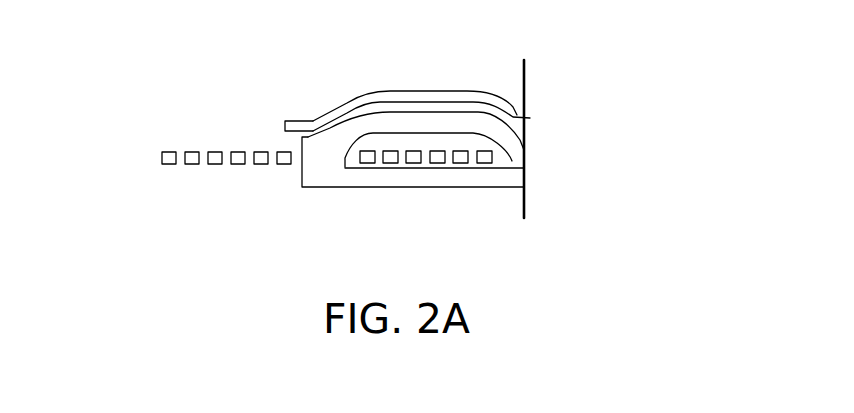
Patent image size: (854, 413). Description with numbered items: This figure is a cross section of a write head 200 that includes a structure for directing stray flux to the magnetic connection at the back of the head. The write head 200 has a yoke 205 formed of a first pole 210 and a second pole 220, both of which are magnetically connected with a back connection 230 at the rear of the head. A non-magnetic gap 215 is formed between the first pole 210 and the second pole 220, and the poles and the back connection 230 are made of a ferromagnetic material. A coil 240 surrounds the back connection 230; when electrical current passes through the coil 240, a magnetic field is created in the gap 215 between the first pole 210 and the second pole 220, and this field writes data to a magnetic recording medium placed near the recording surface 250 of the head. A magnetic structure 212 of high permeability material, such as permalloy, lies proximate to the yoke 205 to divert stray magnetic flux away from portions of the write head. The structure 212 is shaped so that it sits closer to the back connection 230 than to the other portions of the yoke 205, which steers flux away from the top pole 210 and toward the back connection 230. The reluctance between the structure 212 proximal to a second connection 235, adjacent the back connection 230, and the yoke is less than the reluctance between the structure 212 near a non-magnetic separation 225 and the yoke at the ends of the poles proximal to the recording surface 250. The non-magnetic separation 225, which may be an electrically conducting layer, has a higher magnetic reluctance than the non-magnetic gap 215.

The write head 200 is at (642, 243).
The yoke 205 is at (343, 132).
The first pole 210 is at (520, 150).
The magnetic structure 212 is at (390, 90).
The non-magnetic gap 215 is at (512, 162).
The second pole 220 is at (520, 181).
The non-magnetic separation 225 is at (512, 118).
The back connection 230 is at (302, 177).
The second connection 235 is at (283, 126).
The coil 240 is at (162, 157).
The recording surface 250 is at (525, 202).